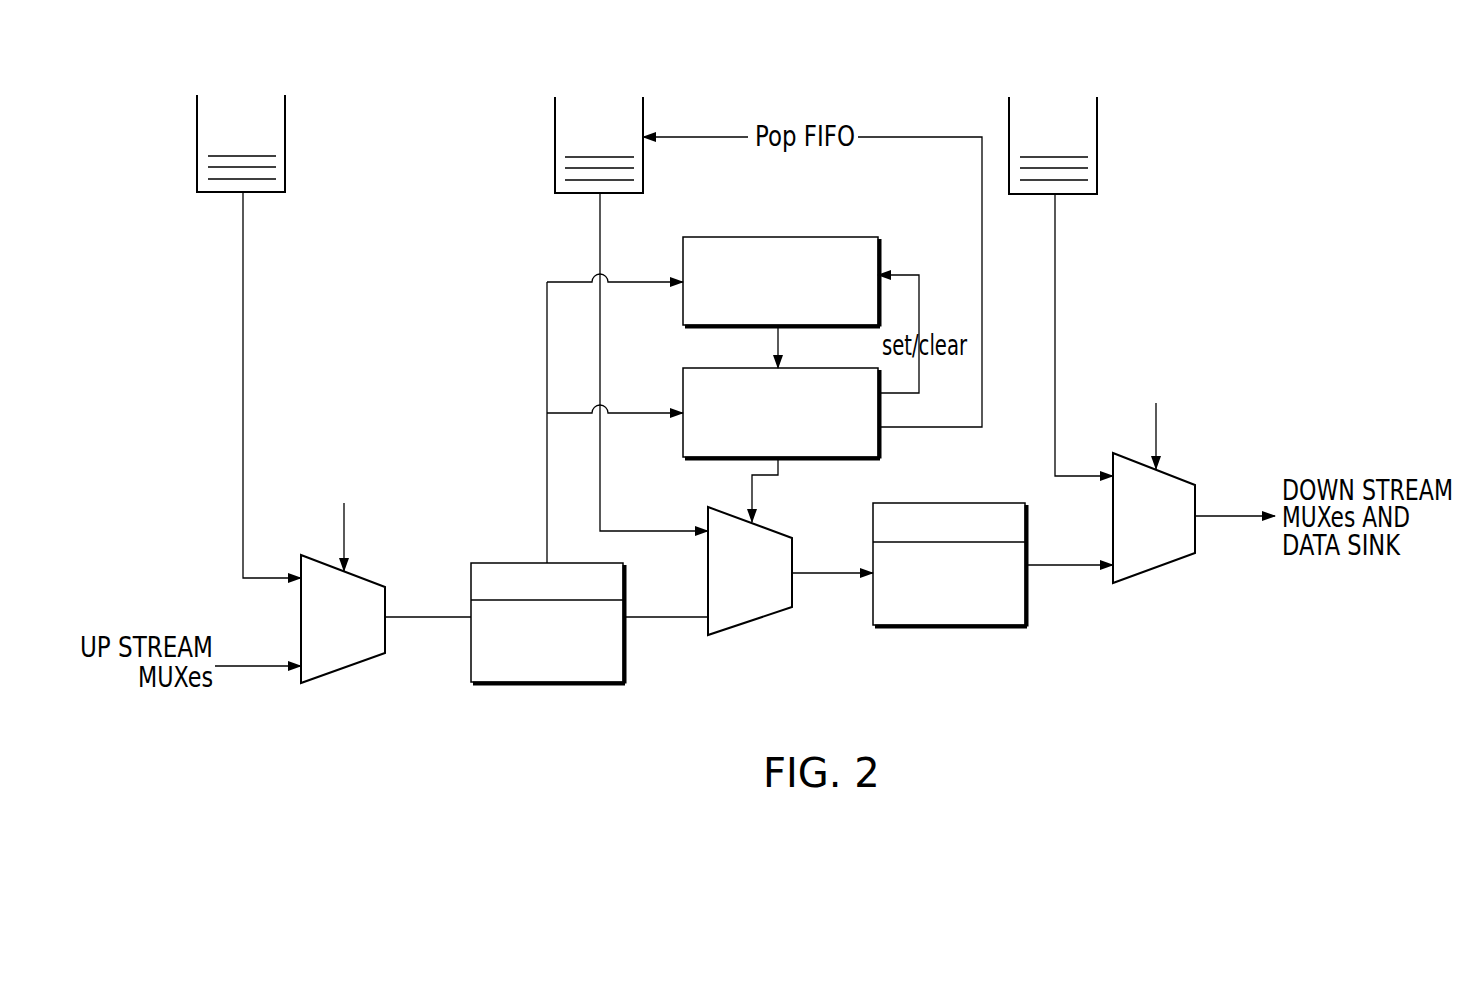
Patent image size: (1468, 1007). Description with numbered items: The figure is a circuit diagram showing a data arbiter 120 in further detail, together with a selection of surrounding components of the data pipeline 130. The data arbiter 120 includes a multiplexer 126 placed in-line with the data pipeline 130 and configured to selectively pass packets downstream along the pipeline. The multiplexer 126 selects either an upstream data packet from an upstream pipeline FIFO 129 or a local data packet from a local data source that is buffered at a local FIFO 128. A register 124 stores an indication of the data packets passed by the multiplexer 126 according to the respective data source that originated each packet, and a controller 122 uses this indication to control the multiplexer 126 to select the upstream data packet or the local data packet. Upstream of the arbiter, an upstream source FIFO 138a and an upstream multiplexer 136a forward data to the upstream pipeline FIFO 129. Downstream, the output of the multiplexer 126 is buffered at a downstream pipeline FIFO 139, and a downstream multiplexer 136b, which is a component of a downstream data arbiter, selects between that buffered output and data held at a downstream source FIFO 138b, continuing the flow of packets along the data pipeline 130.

The data arbiter 120 is at (558, 242).
The controller 122 is at (797, 432).
The register 124 is at (797, 303).
The multiplexer 126 is at (769, 599).
The local FIFO 128 is at (555, 137).
The upstream pipeline FIFO 129 is at (567, 666).
The data pipeline 130 is at (520, 716).
The upstream multiplexer 136a is at (368, 646).
The downstream multiplexer 136b is at (1179, 546).
The upstream source FIFO 138a is at (285, 135).
The downstream source FIFO 138b is at (1097, 137).
The downstream pipeline FIFO 139 is at (969, 606).